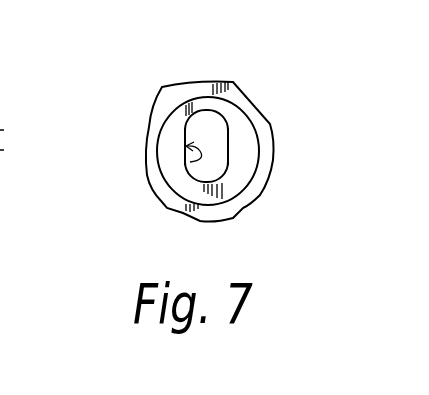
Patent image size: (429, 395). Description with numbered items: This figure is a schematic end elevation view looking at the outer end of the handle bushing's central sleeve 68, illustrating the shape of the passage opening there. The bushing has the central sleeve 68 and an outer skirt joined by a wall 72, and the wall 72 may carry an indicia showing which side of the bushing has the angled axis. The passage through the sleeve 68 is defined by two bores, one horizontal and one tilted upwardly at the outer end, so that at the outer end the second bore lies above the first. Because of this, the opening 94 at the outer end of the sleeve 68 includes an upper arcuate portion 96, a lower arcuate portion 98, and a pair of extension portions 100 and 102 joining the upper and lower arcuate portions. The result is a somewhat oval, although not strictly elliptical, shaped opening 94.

The central sleeve 68 is at (181, 176).
The wall 72 is at (258, 179).
The opening 94 is at (189, 167).
The upper arcuate portion 96 is at (221, 113).
The lower arcuate portion 98 is at (230, 180).
The extension portion 100 is at (184, 138).
The extension portion 102 is at (230, 145).